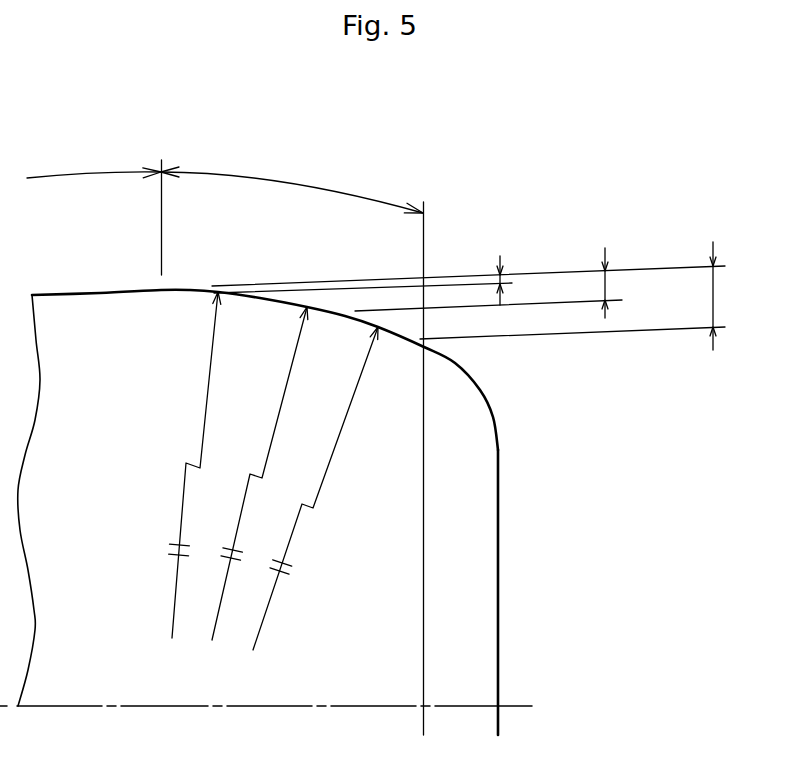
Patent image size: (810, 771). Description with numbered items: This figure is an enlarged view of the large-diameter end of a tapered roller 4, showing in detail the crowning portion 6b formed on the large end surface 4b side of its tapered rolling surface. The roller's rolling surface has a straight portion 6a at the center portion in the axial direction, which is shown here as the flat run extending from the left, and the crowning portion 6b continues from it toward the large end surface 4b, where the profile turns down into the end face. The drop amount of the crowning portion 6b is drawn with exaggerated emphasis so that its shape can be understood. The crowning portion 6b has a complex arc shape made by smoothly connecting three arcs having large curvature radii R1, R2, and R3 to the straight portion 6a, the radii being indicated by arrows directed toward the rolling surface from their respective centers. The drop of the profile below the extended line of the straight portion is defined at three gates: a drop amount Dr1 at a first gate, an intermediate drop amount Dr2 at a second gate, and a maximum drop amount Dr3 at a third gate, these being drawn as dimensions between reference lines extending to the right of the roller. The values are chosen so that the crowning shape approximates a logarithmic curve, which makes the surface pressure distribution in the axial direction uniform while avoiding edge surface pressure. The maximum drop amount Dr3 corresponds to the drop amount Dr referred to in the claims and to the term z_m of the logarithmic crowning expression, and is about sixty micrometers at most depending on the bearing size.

The tapered roller 4 is at (98, 348).
The large end surface 4b is at (498, 583).
The straight portion 6a is at (92, 172).
The crowning portion 6b is at (287, 180).
The curvature radius R1 is at (205, 398).
The curvature radius R2 is at (278, 412).
The curvature radius R3 is at (332, 455).
The drop amount Dr1 is at (468, 266).
The intermediate drop amount Dr2 is at (489, 269).
The maximum drop amount Dr3 is at (595, 282).